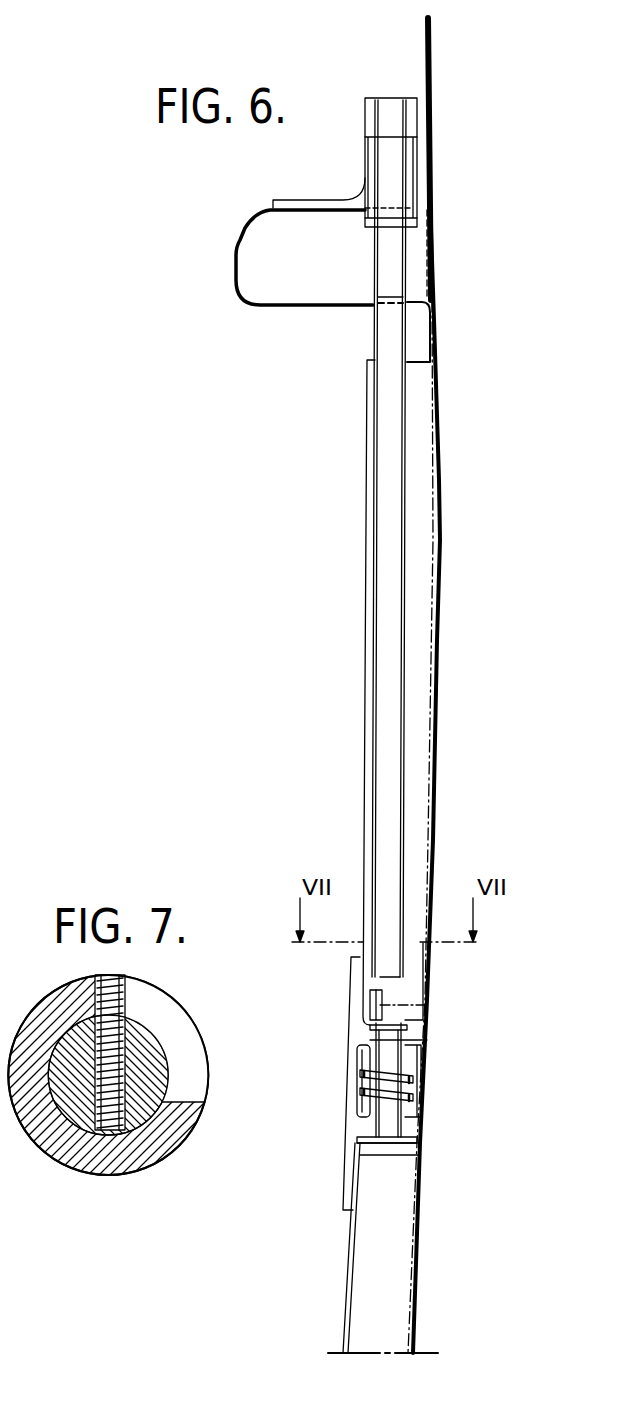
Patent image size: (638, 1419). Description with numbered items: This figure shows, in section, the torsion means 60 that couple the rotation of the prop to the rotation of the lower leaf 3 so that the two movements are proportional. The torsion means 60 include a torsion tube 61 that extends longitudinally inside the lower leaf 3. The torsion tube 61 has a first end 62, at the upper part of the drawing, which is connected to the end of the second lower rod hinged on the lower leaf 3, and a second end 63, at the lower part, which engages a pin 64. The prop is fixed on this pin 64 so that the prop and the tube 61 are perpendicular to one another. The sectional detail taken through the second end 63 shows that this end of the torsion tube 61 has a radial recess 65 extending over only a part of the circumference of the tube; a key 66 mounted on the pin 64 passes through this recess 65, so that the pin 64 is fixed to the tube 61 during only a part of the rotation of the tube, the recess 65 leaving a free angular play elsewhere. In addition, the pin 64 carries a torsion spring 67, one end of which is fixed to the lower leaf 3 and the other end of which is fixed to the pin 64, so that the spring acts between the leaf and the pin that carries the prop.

In FIG. 6, the lower leaf 3 is at (420, 676).
In FIG. 6, the torsion means 60 is at (356, 542).
In FIG. 6, the torsion tube 61 is at (390, 555).
In FIG. 6, the first end 62 is at (390, 183).
In FIG. 6, the second end 63 is at (390, 813).
In FIG. 7, the second end 63 is at (143, 1145).
In FIG. 6, the pin 64 is at (387, 1058).
In FIG. 7, the pin 64 is at (147, 1070).
In FIG. 7, the radial recess 65 is at (173, 1033).
In FIG. 6, the key 66 is at (378, 1011).
In FIG. 7, the key 66 is at (113, 990).
In FIG. 6, the torsion spring 67 is at (408, 1097).